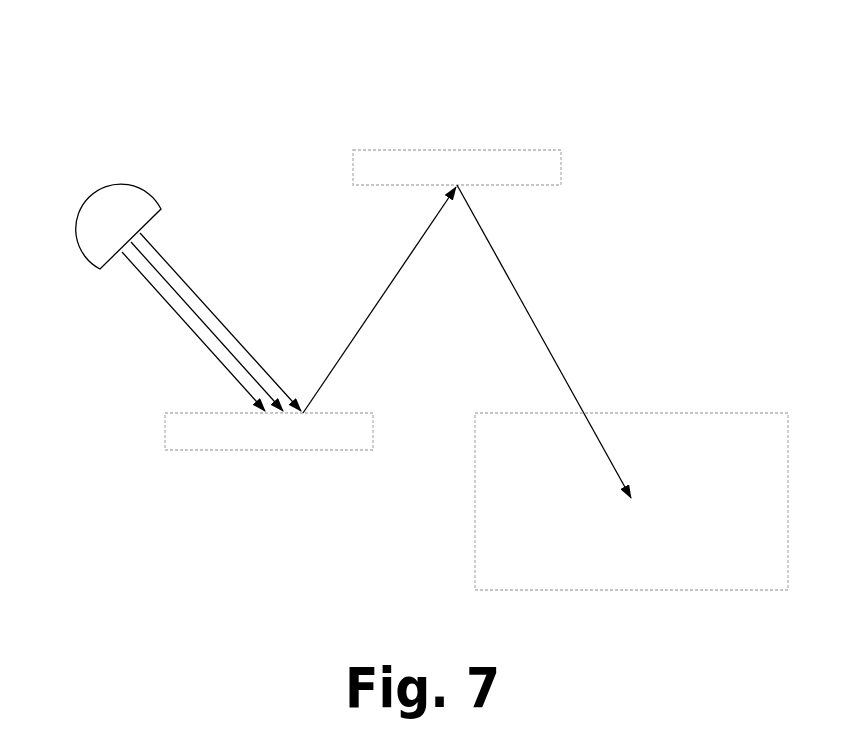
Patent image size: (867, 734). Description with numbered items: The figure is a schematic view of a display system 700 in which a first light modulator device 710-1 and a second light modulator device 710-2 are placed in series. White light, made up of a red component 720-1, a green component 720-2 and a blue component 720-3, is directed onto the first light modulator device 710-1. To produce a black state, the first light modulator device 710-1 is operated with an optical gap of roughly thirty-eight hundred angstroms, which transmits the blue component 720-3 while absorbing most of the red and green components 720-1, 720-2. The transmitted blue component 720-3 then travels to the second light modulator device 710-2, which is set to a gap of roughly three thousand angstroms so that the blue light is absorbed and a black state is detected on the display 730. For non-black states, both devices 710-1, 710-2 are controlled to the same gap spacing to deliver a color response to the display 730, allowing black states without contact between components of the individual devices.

The display system 700 is at (362, 95).
The first light modulator device 710-1 is at (270, 450).
The second light modulator device 710-2 is at (456, 150).
The red component 720-1 is at (193, 333).
The green component 720-2 is at (180, 298).
The blue component 720-3 is at (208, 300).
The display 730 is at (631, 501).